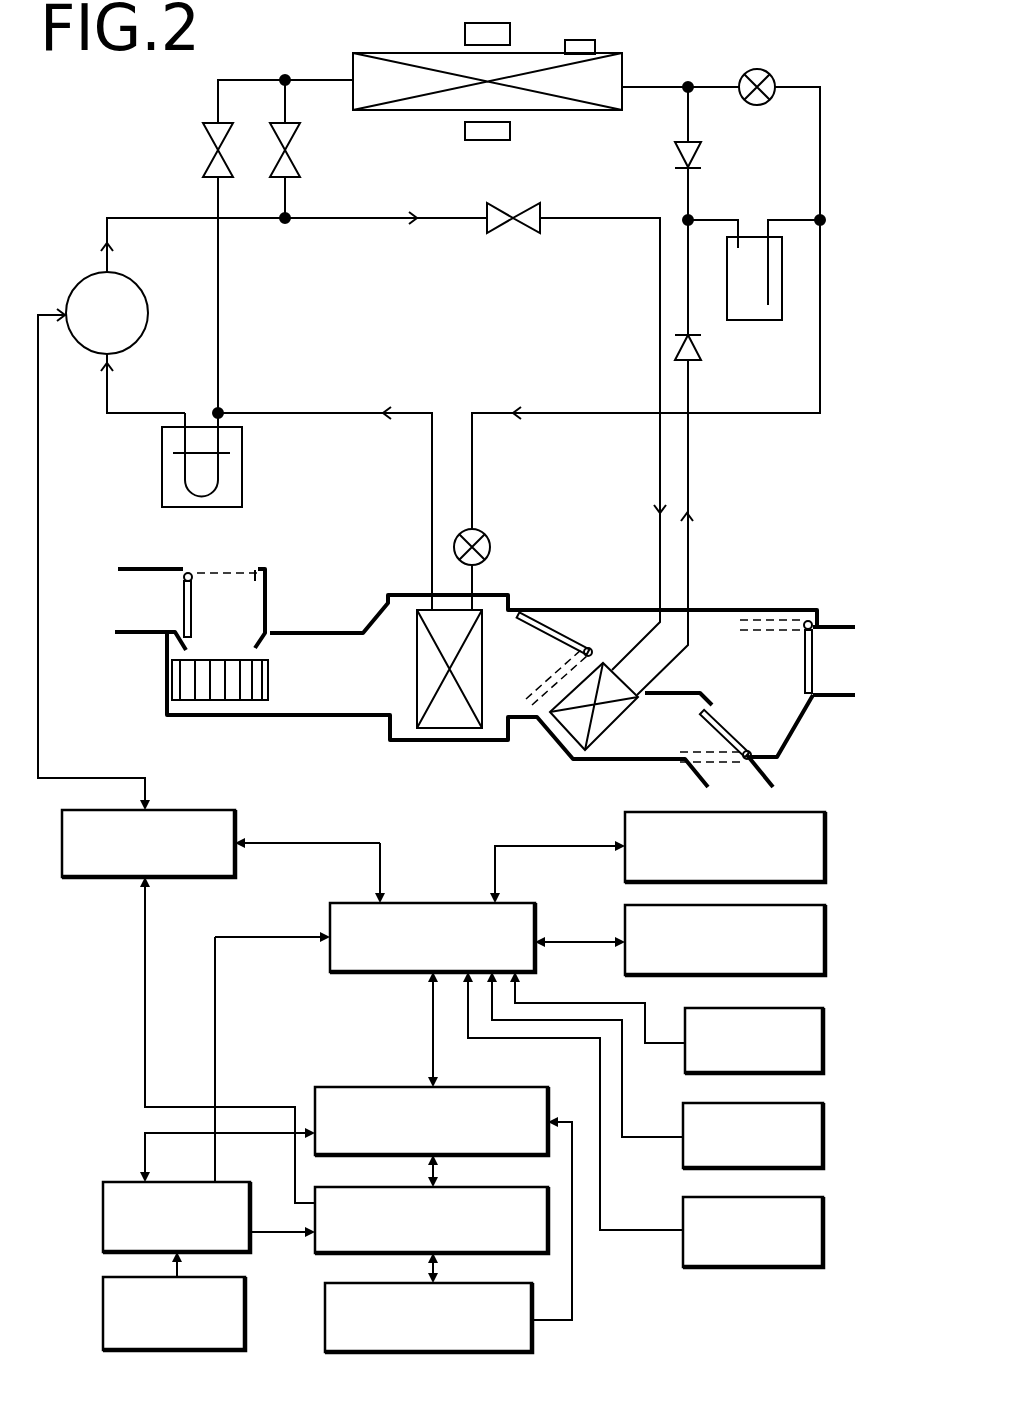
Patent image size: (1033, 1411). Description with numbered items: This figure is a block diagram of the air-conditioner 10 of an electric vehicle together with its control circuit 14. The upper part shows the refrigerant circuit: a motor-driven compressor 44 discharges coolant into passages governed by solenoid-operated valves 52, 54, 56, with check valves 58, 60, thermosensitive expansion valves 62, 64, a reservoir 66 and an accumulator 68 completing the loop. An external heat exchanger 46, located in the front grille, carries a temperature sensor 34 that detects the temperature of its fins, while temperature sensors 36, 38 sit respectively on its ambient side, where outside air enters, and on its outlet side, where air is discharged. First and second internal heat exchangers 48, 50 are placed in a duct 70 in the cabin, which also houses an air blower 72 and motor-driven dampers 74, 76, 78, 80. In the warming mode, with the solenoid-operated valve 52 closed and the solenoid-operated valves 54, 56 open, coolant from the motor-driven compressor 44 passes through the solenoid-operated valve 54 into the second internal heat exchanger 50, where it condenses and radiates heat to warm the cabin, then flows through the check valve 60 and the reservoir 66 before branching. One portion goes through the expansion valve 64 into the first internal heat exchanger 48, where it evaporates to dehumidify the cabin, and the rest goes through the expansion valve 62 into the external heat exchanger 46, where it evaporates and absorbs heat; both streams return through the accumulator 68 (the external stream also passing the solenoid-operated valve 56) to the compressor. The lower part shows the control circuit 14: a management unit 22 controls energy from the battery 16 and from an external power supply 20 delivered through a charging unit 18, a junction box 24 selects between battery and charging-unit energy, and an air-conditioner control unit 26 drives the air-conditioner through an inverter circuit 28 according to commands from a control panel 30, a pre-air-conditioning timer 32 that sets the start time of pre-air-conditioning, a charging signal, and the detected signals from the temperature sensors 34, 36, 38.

The air-conditioner 10 is at (841, 334).
The control circuit 14 is at (684, 1303).
The battery 16 is at (540, 1338).
The charging unit 18 is at (103, 1243).
The external power supply 20 is at (245, 1310).
The management unit 22 is at (370, 1087).
The junction box 24 is at (315, 1195).
The air-conditioner control unit 26 is at (425, 903).
The inverter circuit 28 is at (185, 810).
The control panel 30 is at (826, 946).
The pre-air-conditioning timer 32 is at (826, 830).
The temperature sensor 34 is at (588, 44).
The temperature sensor 36 is at (470, 34).
The temperature sensor 38 is at (510, 135).
The motor-driven compressor 44 is at (137, 300).
The external heat exchanger 46 is at (522, 56).
The first internal heat exchanger 48 is at (422, 674).
The second internal heat exchanger 50 is at (608, 727).
The solenoid-operated valve 52 is at (298, 160).
The solenoid-operated valve 54 is at (518, 234).
The solenoid-operated valve 56 is at (205, 165).
The check valve 58 is at (700, 158).
The check valve 60 is at (698, 352).
The thermosensitive expansion valve 62 is at (757, 69).
The thermosensitive expansion valve 64 is at (490, 535).
The reservoir 66 is at (774, 320).
The accumulator 68 is at (242, 490).
The duct 70 is at (742, 608).
The air blower 72 is at (268, 690).
The motor-driven damper 74 is at (192, 612).
The motor-driven damper 76 is at (565, 622).
The motor-driven damper 78 is at (718, 720).
The motor-driven damper 80 is at (812, 665).